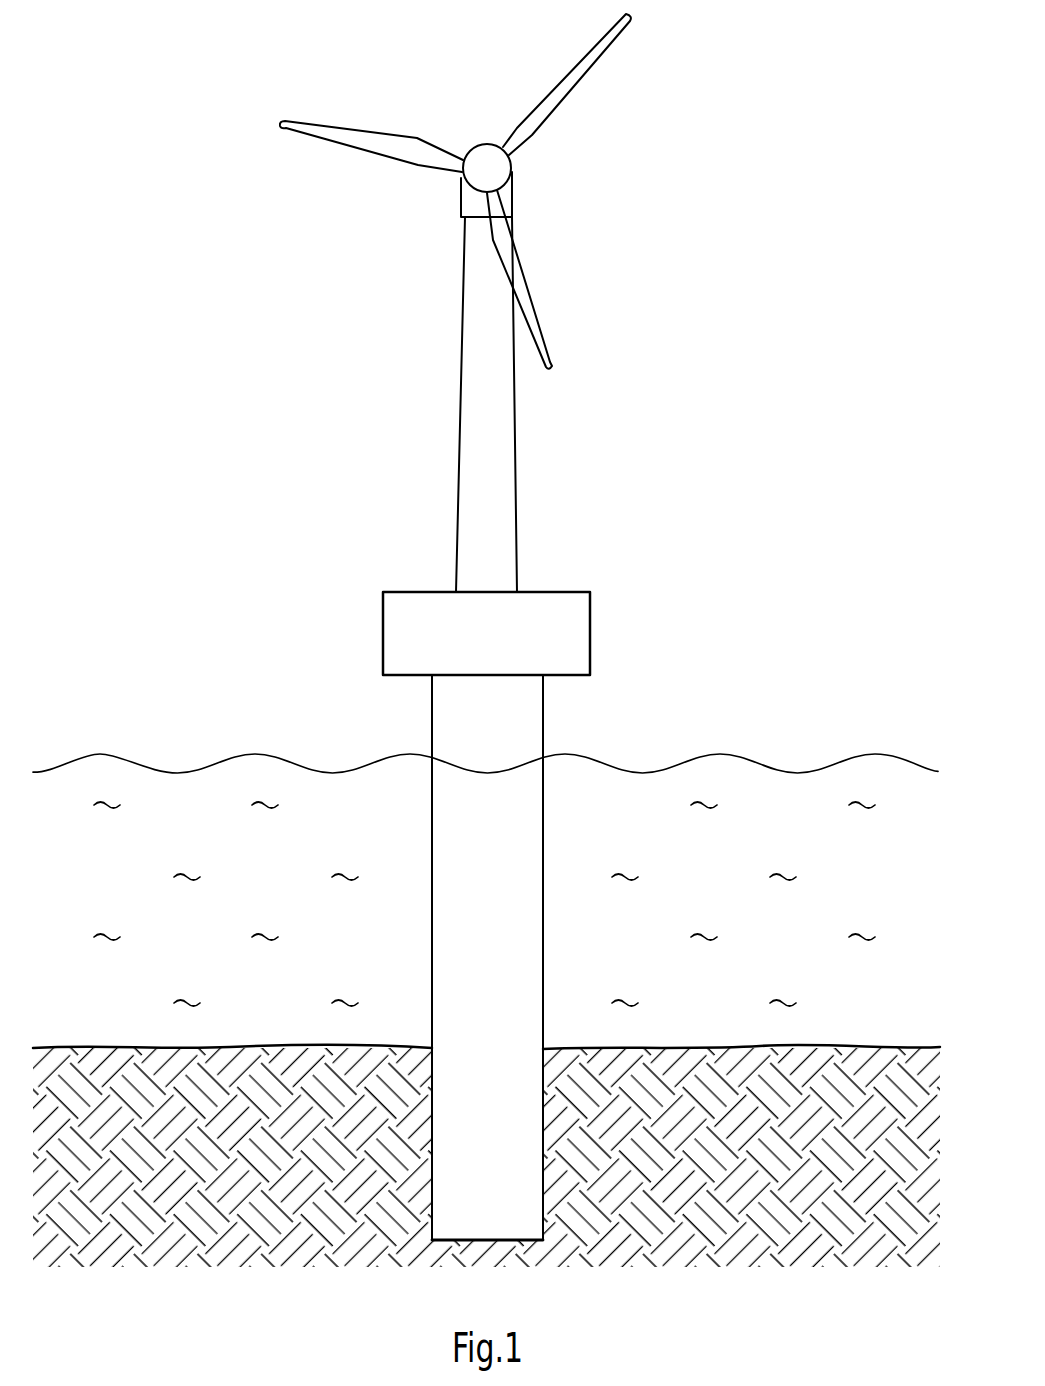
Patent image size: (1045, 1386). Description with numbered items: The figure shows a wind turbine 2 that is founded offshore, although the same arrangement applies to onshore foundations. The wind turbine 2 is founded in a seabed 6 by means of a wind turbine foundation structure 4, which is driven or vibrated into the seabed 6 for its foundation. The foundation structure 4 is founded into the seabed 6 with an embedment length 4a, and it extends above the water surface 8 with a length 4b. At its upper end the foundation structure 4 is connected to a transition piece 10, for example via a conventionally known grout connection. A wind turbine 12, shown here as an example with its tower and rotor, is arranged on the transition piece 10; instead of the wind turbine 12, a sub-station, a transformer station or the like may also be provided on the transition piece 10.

The wind turbine 2 is at (556, 627).
The wind turbine foundation structure 4 is at (527, 963).
The embedment length 4a is at (440, 1050).
The length above the water surface 4b is at (603, 677).
The seabed 6 is at (280, 1047).
The water surface 8 is at (257, 753).
The transition piece 10 is at (575, 633).
The wind turbine 12 is at (500, 473).